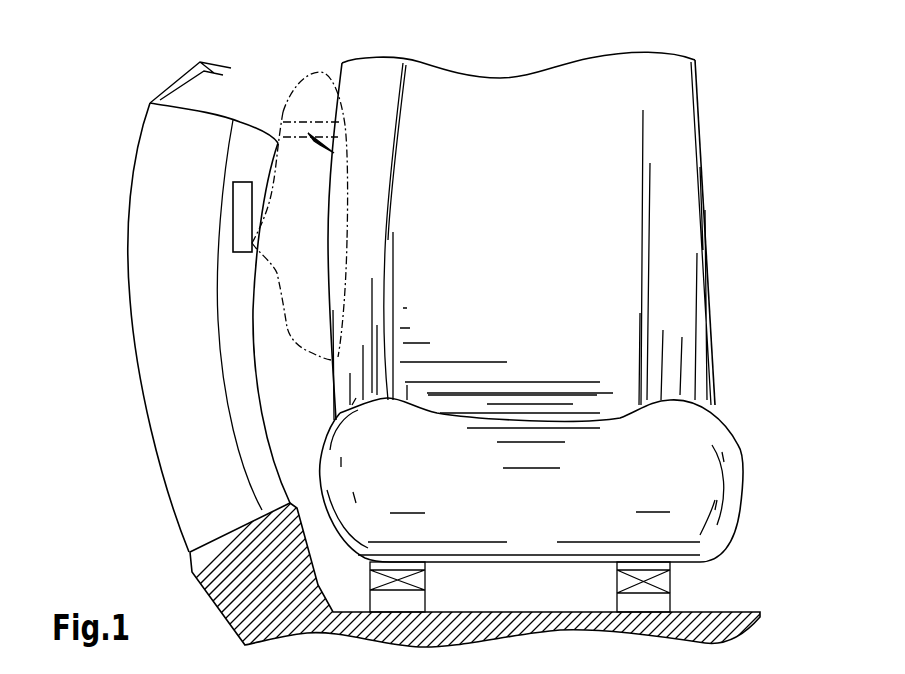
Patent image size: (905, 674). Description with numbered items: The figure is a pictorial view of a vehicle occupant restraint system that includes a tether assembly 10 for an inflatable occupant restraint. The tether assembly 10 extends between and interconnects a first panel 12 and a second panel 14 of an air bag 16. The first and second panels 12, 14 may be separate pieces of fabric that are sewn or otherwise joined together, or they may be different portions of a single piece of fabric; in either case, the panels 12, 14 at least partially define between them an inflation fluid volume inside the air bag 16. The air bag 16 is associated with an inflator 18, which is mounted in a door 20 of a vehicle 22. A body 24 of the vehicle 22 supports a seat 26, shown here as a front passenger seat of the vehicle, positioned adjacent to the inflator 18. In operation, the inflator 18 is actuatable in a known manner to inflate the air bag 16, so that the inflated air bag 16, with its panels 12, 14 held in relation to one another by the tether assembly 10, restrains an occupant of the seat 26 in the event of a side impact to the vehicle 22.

The tether assembly 10 is at (333, 156).
The first panel 12 is at (350, 219).
The second panel 14 is at (287, 328).
The air bag 16 is at (280, 92).
The inflator 18 is at (233, 216).
The door 20 is at (130, 352).
The vehicle 22 is at (745, 360).
The body 24 is at (739, 612).
The seat 26 is at (735, 208).